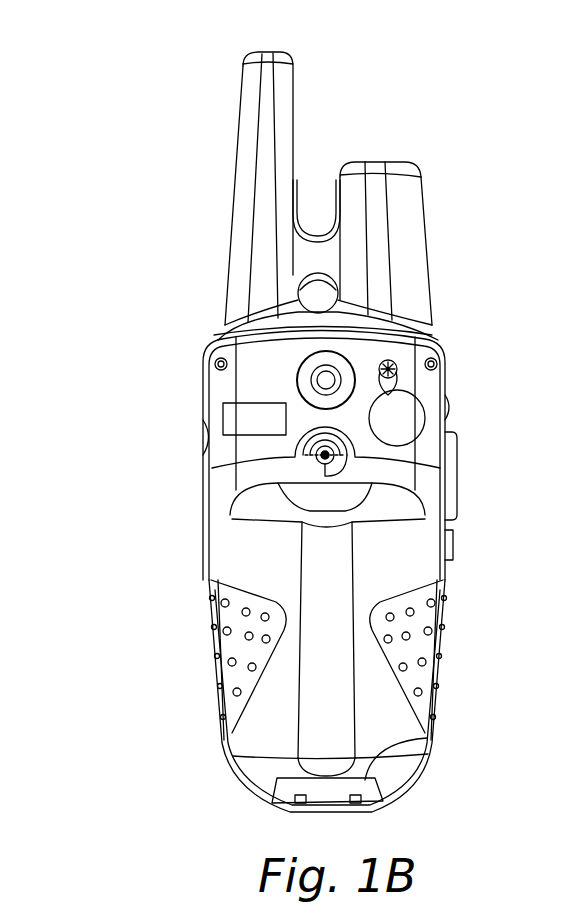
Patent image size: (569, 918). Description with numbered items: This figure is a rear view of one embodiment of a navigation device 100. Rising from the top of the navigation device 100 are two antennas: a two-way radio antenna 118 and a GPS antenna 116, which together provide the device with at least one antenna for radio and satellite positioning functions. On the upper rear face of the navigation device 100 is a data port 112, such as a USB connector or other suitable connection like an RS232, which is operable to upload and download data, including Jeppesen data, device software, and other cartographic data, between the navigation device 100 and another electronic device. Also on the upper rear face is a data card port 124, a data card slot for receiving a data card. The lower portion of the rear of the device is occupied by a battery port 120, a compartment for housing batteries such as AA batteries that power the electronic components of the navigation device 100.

The navigation device 100 is at (469, 95).
The two-way radio antenna 118 is at (238, 146).
The GPS antenna 116 is at (425, 236).
The data card port 124 is at (230, 412).
The data port 112 is at (400, 418).
The battery port 120 is at (383, 545).